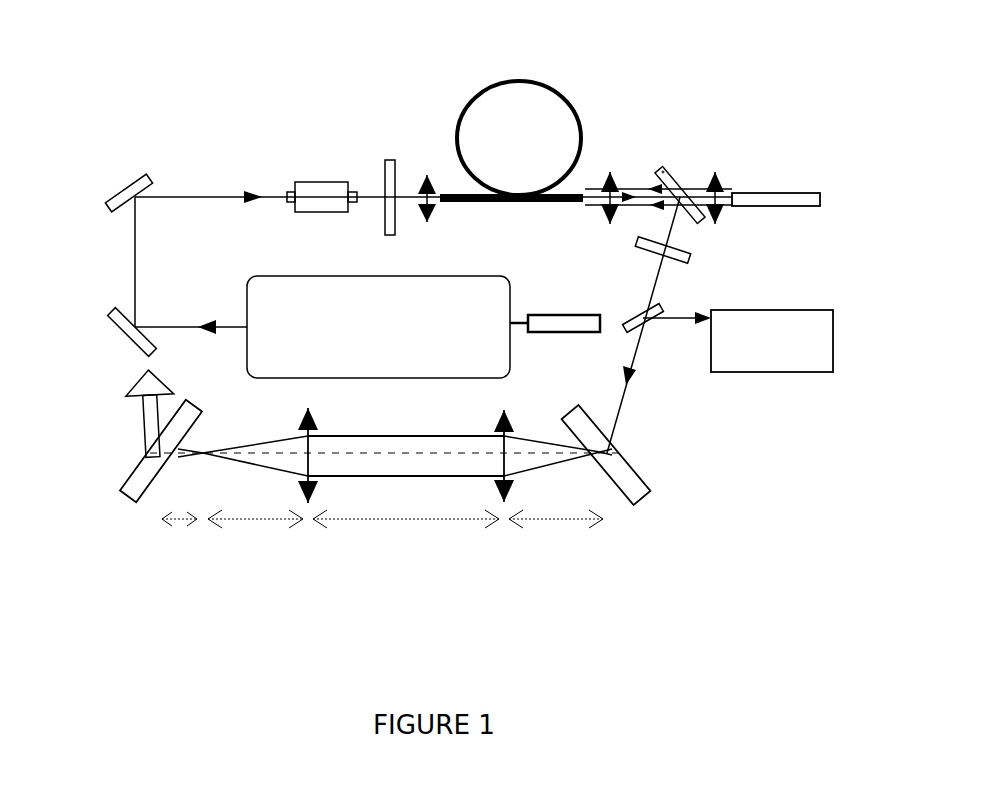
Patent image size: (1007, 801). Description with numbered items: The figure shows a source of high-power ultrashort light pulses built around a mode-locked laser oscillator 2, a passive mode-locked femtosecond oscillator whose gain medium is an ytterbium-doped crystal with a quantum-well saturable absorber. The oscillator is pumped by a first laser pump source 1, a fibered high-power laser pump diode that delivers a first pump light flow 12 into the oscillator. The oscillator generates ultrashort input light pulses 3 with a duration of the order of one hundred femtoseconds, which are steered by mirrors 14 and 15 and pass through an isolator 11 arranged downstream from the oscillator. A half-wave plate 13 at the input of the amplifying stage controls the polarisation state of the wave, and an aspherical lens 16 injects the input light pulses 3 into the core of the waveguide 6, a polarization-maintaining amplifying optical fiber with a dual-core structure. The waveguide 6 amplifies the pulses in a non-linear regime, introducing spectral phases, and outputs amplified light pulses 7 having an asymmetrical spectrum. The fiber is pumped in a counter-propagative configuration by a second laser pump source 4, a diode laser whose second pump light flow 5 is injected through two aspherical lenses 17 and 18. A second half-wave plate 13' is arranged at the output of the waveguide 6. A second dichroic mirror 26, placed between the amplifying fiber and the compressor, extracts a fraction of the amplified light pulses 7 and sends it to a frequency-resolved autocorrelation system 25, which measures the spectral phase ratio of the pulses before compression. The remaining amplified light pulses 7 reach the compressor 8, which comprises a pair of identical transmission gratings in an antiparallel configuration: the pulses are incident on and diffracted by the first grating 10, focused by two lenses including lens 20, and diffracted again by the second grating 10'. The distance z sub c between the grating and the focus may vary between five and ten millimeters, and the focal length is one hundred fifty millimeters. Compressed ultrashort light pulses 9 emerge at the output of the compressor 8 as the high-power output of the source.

The first laser pump source 1 is at (560, 313).
The mode-locked laser oscillator 2 is at (247, 289).
The input light pulses 3 is at (157, 323).
The second laser pump source 4 is at (769, 191).
The second pump light flow 5 is at (686, 172).
The waveguide 6 is at (512, 82).
The amplified light pulses 7 is at (628, 188).
The compressor 8 is at (552, 569).
The compressed ultrashort light pulses 9 is at (148, 430).
The first grating 10 is at (643, 470).
The second grating 10' is at (161, 489).
The isolator 11 is at (305, 182).
The first pump light flow 12 is at (514, 327).
The half-wave plate 13 is at (363, 203).
The second half-wave plate 13' is at (705, 252).
The mirror 14 is at (108, 318).
The mirror 15 is at (128, 187).
The aspherical lens 16 is at (423, 176).
The aspherical lens 17 is at (722, 172).
The aspherical lens 18 is at (604, 172).
The lens 20 is at (308, 524).
The frequency-resolved autocorrelation system 25 is at (780, 373).
The second dichroic mirror 26 is at (662, 306).